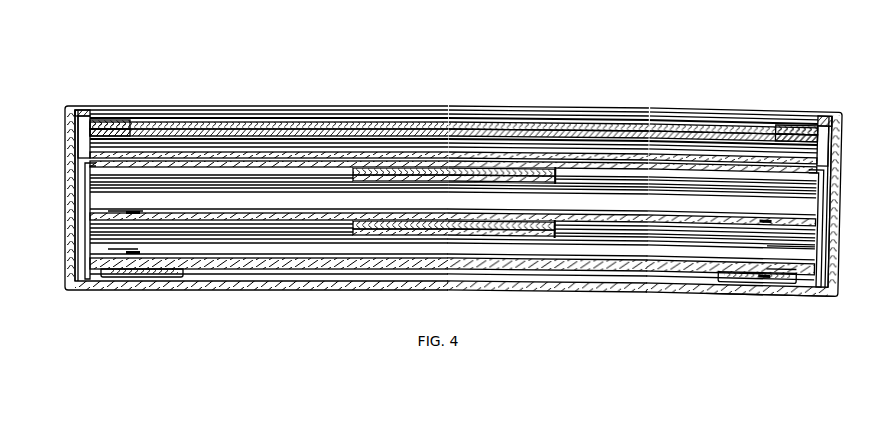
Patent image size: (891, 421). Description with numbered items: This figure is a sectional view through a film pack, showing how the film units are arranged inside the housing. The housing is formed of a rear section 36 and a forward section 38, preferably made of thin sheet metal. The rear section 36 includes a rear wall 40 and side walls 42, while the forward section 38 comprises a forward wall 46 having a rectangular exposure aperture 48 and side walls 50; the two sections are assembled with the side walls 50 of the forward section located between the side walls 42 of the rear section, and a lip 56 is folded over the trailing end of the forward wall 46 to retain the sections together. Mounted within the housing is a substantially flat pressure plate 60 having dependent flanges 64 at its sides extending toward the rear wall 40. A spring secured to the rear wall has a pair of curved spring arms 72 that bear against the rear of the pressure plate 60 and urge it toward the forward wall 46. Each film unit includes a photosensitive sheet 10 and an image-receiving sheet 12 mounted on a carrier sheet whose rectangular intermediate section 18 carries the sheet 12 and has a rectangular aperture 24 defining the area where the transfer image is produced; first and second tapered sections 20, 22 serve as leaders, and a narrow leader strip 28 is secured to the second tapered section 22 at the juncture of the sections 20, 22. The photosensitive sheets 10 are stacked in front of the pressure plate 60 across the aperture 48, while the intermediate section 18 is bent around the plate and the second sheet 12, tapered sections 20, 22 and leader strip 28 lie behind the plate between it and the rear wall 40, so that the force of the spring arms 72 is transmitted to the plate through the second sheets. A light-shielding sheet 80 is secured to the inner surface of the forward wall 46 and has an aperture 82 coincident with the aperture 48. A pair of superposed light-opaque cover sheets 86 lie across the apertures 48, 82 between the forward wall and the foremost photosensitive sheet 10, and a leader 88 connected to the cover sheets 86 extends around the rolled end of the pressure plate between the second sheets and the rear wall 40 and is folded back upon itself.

The photosensitive sheet 10 is at (258, 134).
The image-receiving sheet 12 is at (270, 232).
The intermediate section 18 is at (100, 242).
The first tapered section 20 is at (492, 210).
The second tapered section 22 is at (285, 223).
The aperture 24 is at (132, 205).
The leader strip 28 is at (444, 168).
The rear section 36 is at (814, 290).
The forward section 38 is at (78, 98).
The rear wall 40 is at (642, 284).
The side walls 42 is at (58, 168).
The forward wall 46 is at (93, 107).
The exposure aperture 48 is at (125, 115).
The side walls 50 is at (68, 222).
The lip 56 is at (663, 103).
The pressure plate 60 is at (300, 157).
The flanges 64 is at (70, 195).
The spring arms 72 is at (125, 270).
The light-shielding sheet 80 is at (100, 116).
The aperture 82 is at (122, 121).
The cover sheets 86 is at (200, 123).
The leader 88 is at (352, 252).